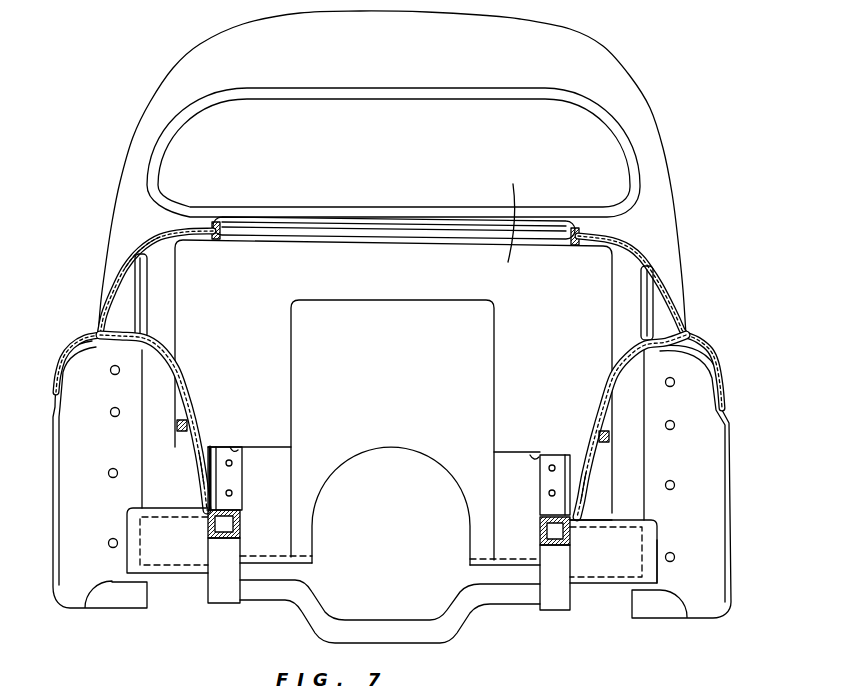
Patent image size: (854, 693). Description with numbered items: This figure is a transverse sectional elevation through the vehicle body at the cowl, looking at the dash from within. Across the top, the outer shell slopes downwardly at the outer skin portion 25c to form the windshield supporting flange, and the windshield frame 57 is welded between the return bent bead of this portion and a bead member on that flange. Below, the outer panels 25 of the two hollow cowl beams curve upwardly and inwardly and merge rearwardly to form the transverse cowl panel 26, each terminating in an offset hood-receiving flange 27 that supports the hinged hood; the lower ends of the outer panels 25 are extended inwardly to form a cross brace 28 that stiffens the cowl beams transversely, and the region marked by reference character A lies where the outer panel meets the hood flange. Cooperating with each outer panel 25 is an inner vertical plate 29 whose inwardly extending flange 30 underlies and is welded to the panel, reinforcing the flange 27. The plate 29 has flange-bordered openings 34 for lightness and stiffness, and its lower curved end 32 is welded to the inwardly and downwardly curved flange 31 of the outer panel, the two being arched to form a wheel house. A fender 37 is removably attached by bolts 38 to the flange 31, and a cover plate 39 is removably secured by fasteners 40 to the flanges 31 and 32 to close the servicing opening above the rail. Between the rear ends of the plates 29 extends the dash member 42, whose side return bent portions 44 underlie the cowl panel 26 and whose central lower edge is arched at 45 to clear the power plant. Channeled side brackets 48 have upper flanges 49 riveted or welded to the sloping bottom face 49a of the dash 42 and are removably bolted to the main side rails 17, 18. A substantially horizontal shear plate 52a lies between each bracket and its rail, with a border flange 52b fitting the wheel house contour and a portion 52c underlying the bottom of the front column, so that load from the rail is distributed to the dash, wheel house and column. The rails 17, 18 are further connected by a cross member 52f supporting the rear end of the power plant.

The outer skin portion 25c is at (569, 67).
The windshield frame 57 is at (590, 148).
The cross brace 28 is at (431, 90).
The transverse cowl panel 26 is at (338, 214).
The hood-receiving flange 27 is at (217, 228).
The dash member 42 is at (507, 268).
The outer panel 25 is at (99, 293).
The weatherstrip A is at (118, 252).
The inwardly extending flange 30 is at (156, 246).
The inner vertical plate 29 is at (150, 330).
The openings 34 is at (149, 297).
The fender 37 is at (68, 347).
The lower curved end 32 is at (182, 392).
The curved flange 31 is at (175, 388).
The fasteners 40 is at (178, 425).
The bolts 38 is at (110, 414).
The cover plate 39 is at (190, 452).
The sloping bottom face 49a is at (272, 449).
The upper flange 49 is at (233, 450).
The channeled side bracket 48 is at (243, 472).
The main side rail 17 is at (243, 527).
The main side rail 18 is at (541, 527).
The return bent portions 44 is at (525, 346).
The arched lower edge 45 is at (447, 468).
The cross member 52f is at (458, 622).
The border flange 52b is at (634, 527).
The shear plate 52a is at (611, 520).
The underlying portion 52c is at (659, 576).